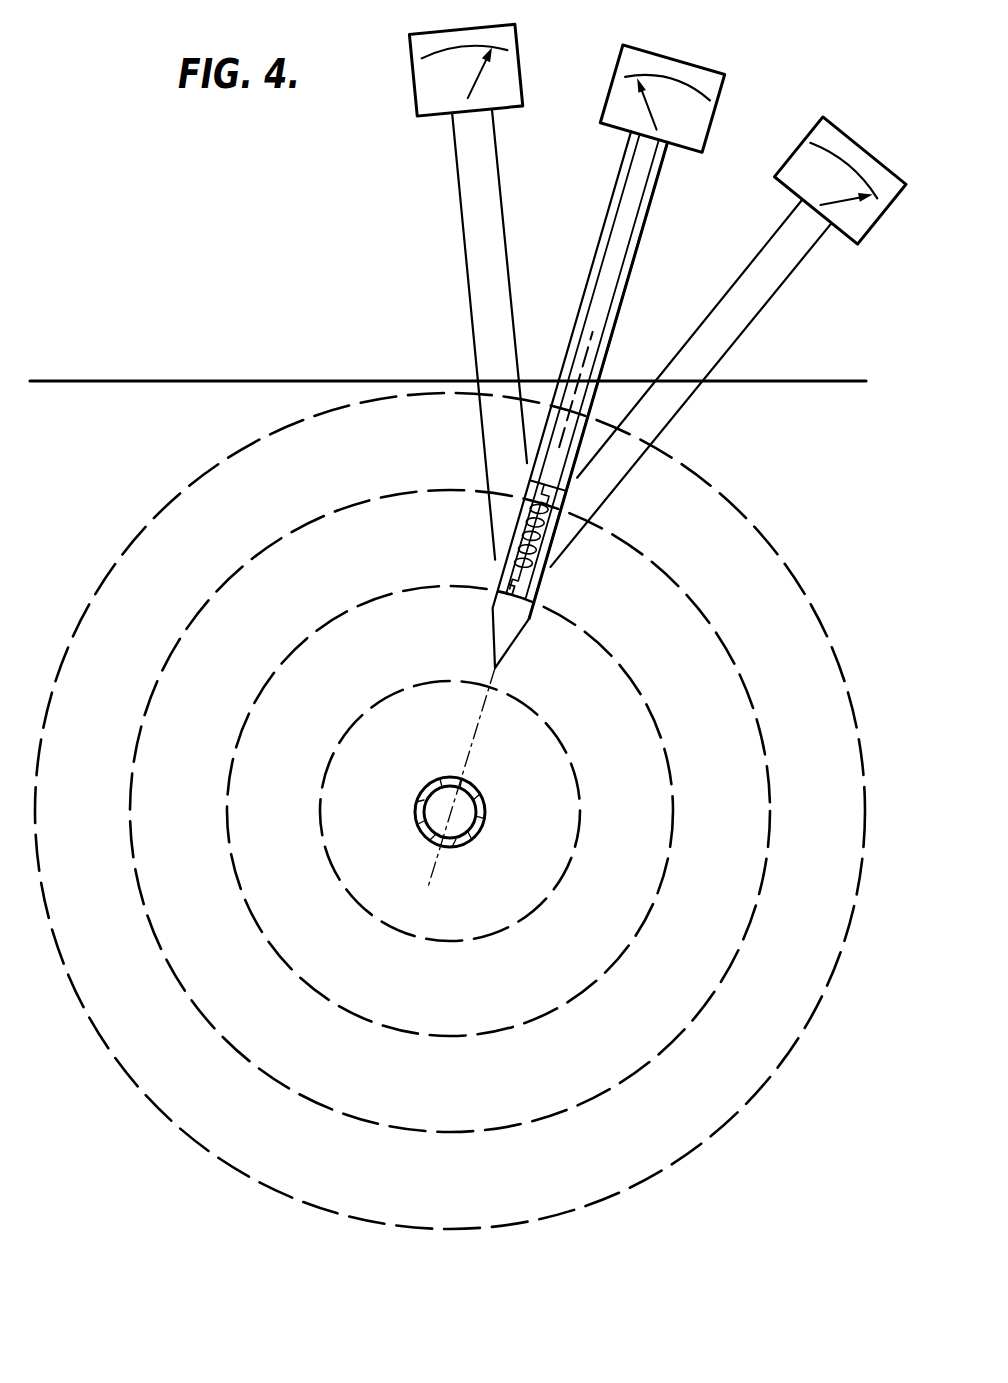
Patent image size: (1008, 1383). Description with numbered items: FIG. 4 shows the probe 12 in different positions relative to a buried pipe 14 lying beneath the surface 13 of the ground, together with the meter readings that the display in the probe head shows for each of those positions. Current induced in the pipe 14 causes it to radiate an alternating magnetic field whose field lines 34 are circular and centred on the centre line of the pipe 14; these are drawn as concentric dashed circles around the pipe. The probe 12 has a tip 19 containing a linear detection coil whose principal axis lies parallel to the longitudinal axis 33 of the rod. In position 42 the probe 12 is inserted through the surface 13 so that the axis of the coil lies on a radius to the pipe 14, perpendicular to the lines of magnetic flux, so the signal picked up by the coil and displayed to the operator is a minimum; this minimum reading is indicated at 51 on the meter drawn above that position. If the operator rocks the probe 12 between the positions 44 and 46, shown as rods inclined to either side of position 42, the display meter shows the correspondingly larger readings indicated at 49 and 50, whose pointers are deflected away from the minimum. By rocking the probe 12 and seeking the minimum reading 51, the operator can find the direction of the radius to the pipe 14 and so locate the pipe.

The probe 12 is at (618, 365).
The surface of the ground 13 is at (228, 380).
The buried pipe 14 is at (418, 827).
The tip 19 is at (512, 647).
The longitudinal axis 33 is at (589, 402).
The magnetic field lines 34 is at (746, 1102).
The position 42 is at (590, 270).
The position 44 is at (468, 269).
The position 46 is at (746, 273).
The meter reading 49 is at (421, 104).
The meter reading 50 is at (792, 194).
The minimum meter reading 51 is at (616, 109).